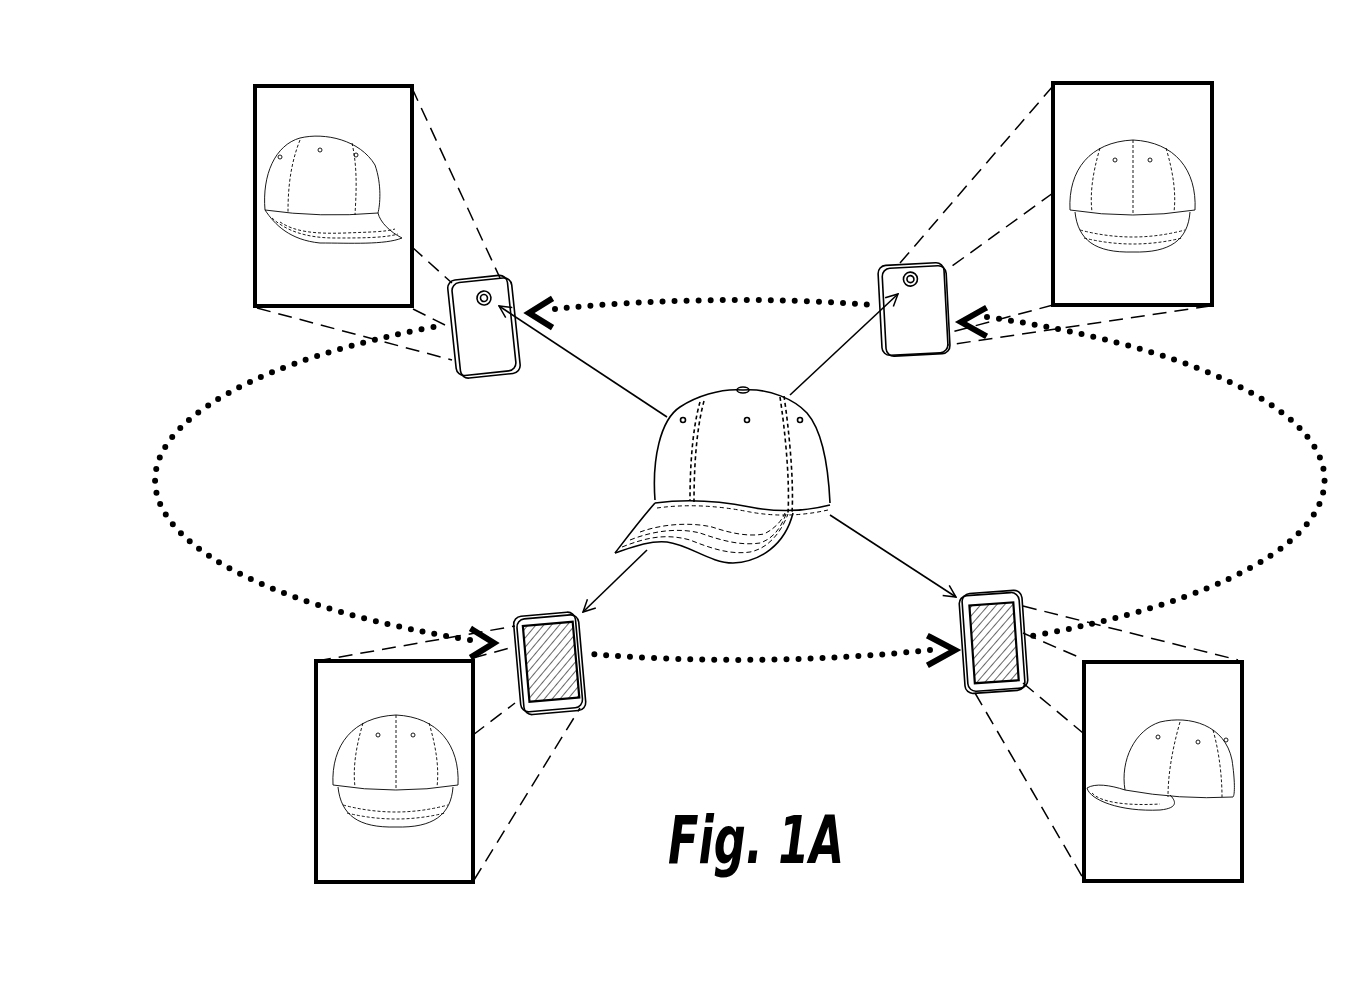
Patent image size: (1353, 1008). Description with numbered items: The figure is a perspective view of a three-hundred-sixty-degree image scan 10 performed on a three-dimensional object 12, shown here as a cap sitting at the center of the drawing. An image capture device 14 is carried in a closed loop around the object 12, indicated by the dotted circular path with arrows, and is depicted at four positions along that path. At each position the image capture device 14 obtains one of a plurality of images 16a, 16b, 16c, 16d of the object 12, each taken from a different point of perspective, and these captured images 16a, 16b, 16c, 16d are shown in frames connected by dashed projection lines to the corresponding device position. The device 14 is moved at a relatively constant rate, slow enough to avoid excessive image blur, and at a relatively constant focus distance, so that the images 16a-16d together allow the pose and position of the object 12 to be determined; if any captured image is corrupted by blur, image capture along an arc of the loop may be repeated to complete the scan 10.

The 360° image scan 10 is at (726, 86).
The three-dimensional object 12 is at (810, 440).
The image capture device 14 is at (495, 346).
The captured image 16a is at (325, 710).
The captured image 16b is at (1228, 692).
The captured image 16c is at (1115, 100).
The captured image 16d is at (322, 96).